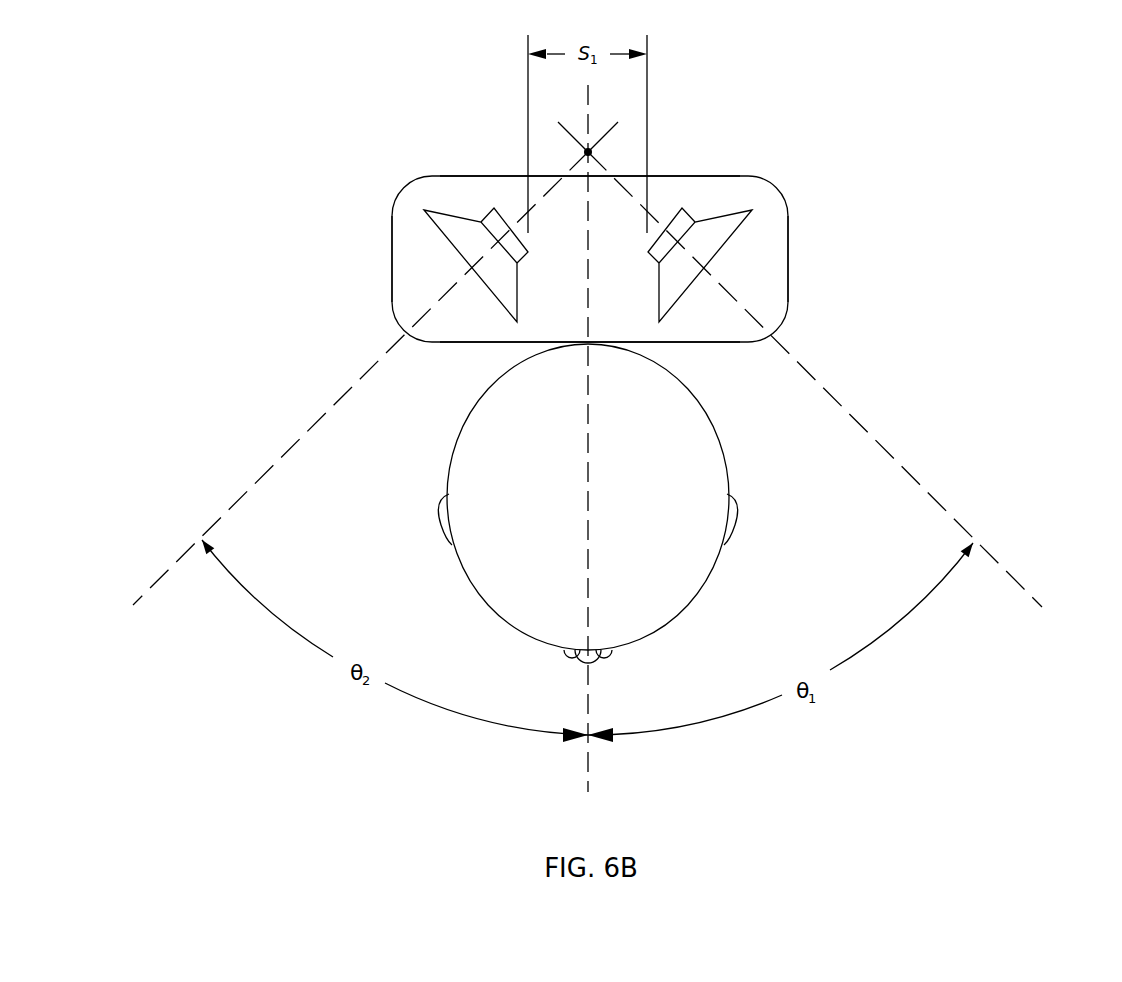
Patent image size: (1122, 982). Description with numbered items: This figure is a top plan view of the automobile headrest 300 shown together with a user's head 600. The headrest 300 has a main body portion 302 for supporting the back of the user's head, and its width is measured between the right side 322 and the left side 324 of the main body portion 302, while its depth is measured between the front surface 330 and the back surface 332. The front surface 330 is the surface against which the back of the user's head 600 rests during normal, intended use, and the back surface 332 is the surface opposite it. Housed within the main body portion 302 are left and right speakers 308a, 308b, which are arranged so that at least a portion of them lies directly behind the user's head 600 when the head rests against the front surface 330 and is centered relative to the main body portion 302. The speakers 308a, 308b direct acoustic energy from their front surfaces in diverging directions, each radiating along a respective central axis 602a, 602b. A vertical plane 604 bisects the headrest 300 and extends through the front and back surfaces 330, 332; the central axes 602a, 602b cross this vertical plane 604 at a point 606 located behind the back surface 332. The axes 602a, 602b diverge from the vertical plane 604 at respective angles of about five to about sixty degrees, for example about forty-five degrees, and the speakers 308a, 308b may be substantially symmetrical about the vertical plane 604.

The automobile headrest 300 is at (597, 235).
The main body portion 302 is at (402, 197).
The left speaker 308a is at (732, 245).
The right speaker 308b is at (443, 238).
The right side 322 is at (392, 232).
The left side 324 is at (788, 232).
The front surface 330 is at (693, 345).
The back surface 332 is at (478, 173).
The user's head 600 is at (463, 418).
The central axis 602a is at (903, 458).
The central axis 602b is at (322, 418).
The vertical plane 604 is at (588, 760).
The point 606 is at (588, 152).